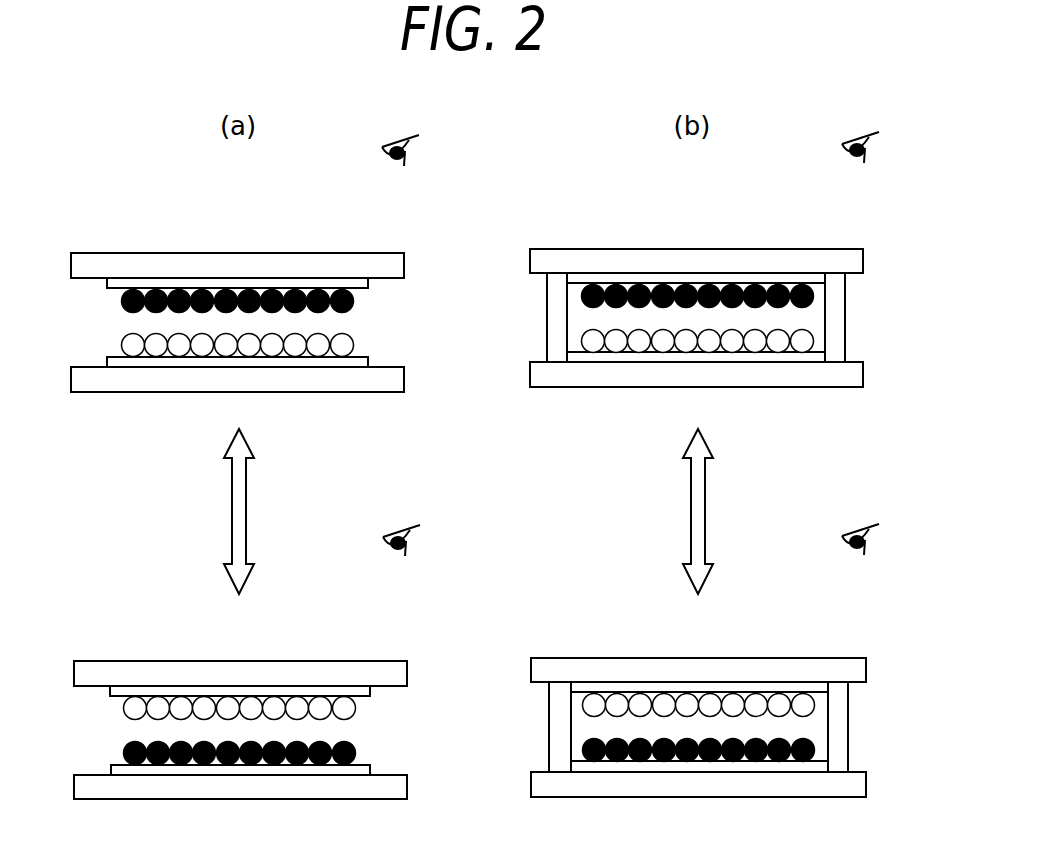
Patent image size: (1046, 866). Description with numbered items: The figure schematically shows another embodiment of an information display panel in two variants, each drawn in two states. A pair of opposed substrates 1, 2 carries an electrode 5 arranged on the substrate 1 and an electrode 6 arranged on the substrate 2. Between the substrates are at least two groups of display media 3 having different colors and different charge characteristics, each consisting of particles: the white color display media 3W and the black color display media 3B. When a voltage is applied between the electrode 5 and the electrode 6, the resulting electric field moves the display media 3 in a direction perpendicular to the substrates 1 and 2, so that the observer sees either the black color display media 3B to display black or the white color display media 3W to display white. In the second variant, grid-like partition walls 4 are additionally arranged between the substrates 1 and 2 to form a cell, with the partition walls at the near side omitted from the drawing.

The substrate 1 is at (167, 383).
The substrate 2 is at (237, 265).
The display media 3 is at (490, 272).
The black color display media 3B is at (353, 301).
The white color display media 3W is at (355, 345).
The partition walls 4 is at (840, 315).
The electrode 5 is at (318, 360).
The electrode 6 is at (318, 283).